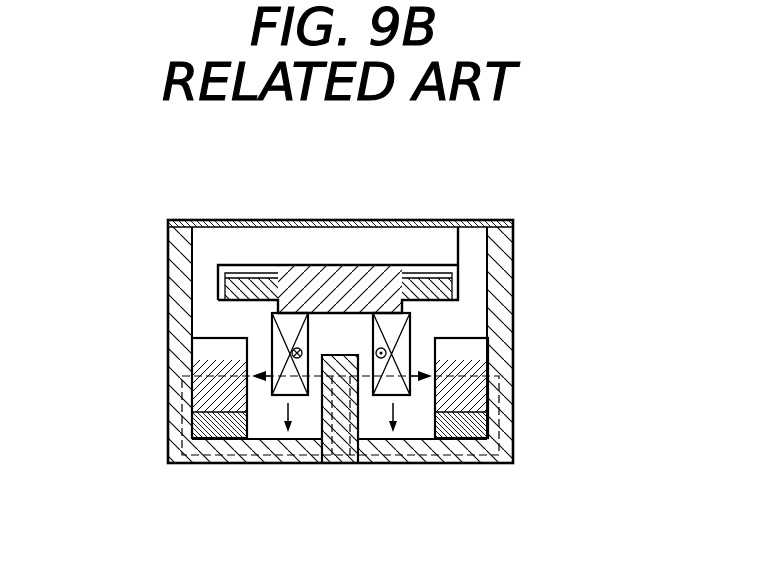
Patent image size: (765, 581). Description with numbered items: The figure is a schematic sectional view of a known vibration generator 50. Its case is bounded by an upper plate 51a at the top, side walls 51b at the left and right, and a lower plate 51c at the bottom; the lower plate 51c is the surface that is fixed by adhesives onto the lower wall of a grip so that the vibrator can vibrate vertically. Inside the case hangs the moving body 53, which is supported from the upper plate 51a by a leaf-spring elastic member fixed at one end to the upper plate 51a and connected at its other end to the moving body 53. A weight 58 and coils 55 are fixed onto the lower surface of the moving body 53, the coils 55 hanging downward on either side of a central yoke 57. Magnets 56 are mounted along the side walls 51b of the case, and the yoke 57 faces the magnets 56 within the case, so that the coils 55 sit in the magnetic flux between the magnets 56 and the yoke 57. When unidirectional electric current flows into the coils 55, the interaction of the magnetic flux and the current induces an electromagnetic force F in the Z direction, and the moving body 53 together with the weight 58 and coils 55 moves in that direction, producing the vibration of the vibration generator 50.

The vibration generator 50 is at (212, 221).
The upper plate 51a is at (463, 222).
The side walls 51b is at (182, 278).
The lower plate 51c is at (477, 458).
The moving body 53 is at (343, 293).
The coils 55 is at (293, 387).
The magnets 56 is at (195, 360).
The yoke 57 is at (340, 448).
The weight 58 is at (250, 290).